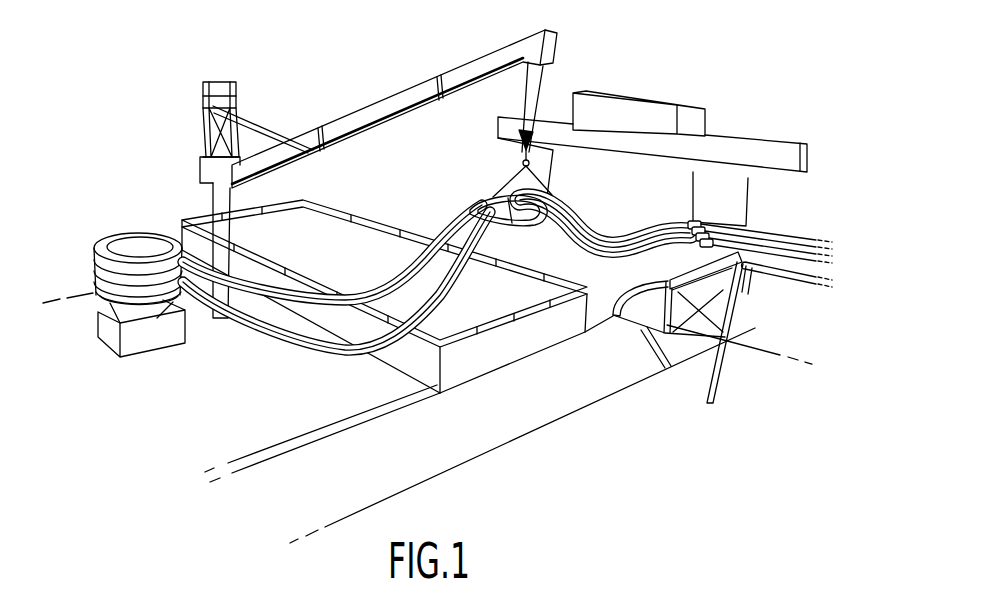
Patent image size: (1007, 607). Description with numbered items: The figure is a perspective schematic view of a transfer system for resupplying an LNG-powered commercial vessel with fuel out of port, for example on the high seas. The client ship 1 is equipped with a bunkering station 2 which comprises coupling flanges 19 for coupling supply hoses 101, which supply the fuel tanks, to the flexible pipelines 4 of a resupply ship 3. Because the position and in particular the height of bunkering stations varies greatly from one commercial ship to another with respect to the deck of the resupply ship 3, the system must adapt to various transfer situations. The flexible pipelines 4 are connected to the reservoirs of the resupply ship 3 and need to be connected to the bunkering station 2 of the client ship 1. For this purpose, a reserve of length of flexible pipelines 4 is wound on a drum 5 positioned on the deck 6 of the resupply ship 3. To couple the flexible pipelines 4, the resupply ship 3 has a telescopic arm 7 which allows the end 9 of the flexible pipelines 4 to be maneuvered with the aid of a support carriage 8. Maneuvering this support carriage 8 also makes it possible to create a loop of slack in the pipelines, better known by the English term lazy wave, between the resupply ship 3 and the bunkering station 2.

The client ship 1 is at (580, 474).
The bunkering station 2 is at (766, 220).
The resupply ship 3 is at (646, 90).
The flexible pipelines 4 is at (383, 282).
The drum 5 is at (114, 237).
The deck 6 is at (174, 410).
The telescopic arm 7 is at (238, 87).
The support carriage 8 is at (481, 203).
The end of the flexible pipelines 9 is at (665, 242).
The coupling flanges 19 is at (731, 222).
The supply hoses 101 is at (785, 238).